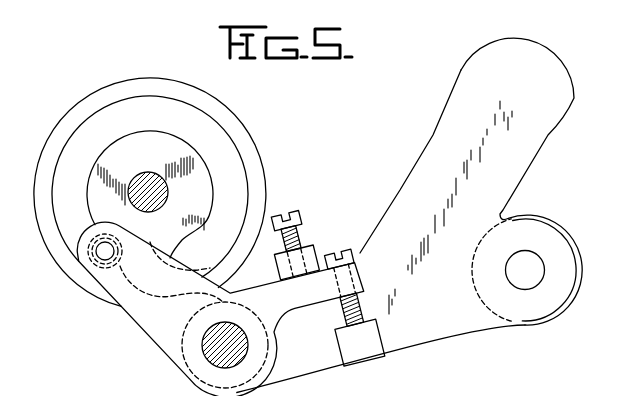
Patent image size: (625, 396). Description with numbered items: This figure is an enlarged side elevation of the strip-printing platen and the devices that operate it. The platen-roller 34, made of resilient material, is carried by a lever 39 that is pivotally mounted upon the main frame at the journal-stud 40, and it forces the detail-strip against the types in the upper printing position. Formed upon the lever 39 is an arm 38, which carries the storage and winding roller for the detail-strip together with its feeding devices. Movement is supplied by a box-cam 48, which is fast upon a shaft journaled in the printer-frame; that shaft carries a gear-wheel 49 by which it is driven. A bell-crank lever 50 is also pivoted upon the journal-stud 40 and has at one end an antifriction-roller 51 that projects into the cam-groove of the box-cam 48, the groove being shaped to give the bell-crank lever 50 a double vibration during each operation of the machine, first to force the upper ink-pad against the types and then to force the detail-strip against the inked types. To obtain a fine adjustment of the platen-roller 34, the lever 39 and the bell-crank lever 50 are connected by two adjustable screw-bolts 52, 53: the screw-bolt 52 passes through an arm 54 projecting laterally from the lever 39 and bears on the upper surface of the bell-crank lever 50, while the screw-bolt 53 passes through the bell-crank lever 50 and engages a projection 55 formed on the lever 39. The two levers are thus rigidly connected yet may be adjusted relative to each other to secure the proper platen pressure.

The platen-roller 34 is at (579, 276).
The arm 38 is at (347, 176).
The lever 39 is at (381, 346).
The journal-stud 40 is at (249, 352).
The box-cam 48 is at (61, 120).
The gear-wheel 49 is at (150, 215).
The bell-crank lever 50 is at (140, 327).
The antifriction-roller 51 is at (88, 252).
The adjustable screw-bolt 52 is at (296, 209).
The adjustable screw-bolt 53 is at (341, 314).
The arm 54 is at (276, 267).
The projection 55 is at (360, 342).